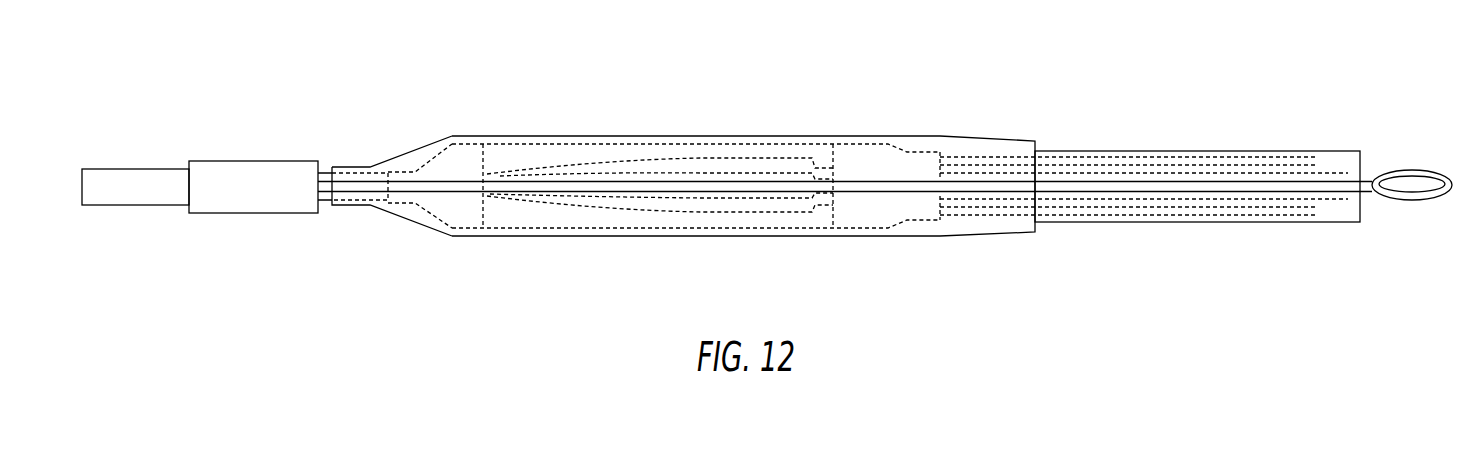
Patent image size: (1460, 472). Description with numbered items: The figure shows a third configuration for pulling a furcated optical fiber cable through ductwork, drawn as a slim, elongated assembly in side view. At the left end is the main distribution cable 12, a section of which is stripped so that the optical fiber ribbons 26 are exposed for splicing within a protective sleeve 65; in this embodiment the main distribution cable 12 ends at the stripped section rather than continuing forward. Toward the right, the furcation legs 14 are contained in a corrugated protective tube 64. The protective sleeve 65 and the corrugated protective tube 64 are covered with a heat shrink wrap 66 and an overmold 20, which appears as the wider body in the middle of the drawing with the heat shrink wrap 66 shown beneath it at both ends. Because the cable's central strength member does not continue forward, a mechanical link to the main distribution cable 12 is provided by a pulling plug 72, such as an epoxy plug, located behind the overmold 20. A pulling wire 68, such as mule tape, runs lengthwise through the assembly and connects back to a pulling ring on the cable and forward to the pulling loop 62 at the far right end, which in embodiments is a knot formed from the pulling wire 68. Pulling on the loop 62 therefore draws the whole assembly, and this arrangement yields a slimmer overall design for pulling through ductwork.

The main distribution cable 12 is at (150, 168).
The pulling plug 72 is at (252, 160).
The heat shrink wrap 66 is at (453, 133).
The optical fiber ribbons 26 is at (592, 172).
The overmold 20 is at (690, 136).
The protective sleeve 65 is at (775, 153).
The pulling wire 68 is at (868, 188).
The corrugated protective tube 64 is at (1135, 150).
The furcation legs 14 is at (1092, 158).
The pulling loop 62 is at (1440, 169).